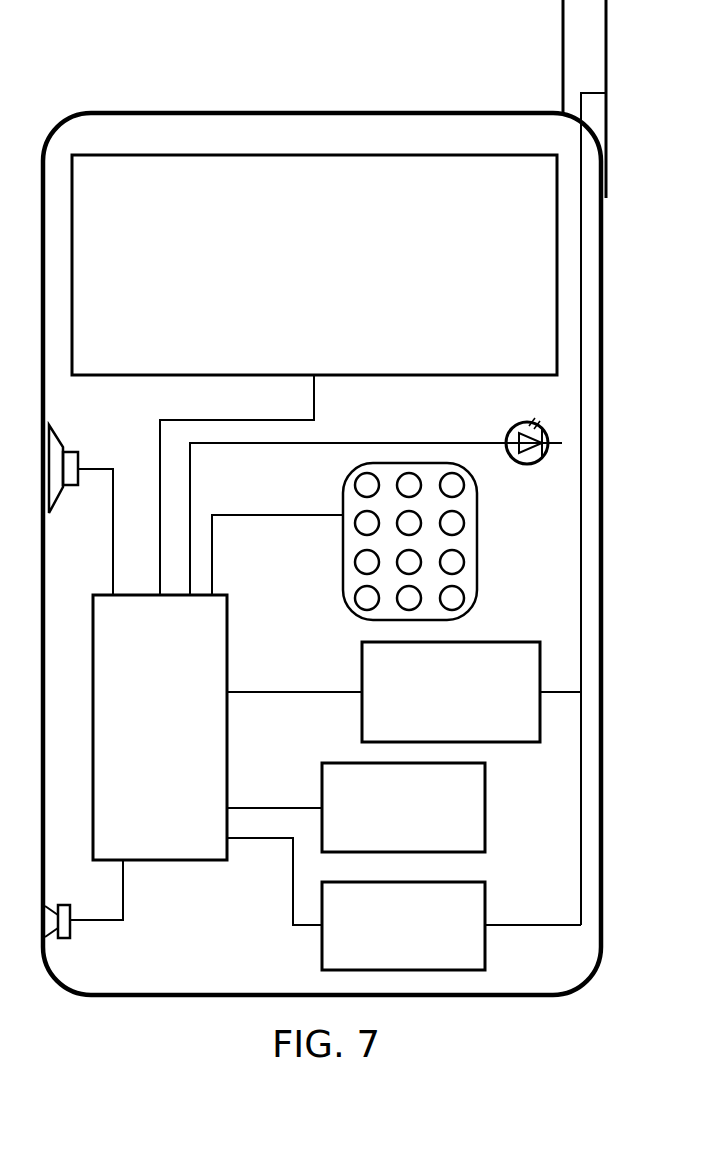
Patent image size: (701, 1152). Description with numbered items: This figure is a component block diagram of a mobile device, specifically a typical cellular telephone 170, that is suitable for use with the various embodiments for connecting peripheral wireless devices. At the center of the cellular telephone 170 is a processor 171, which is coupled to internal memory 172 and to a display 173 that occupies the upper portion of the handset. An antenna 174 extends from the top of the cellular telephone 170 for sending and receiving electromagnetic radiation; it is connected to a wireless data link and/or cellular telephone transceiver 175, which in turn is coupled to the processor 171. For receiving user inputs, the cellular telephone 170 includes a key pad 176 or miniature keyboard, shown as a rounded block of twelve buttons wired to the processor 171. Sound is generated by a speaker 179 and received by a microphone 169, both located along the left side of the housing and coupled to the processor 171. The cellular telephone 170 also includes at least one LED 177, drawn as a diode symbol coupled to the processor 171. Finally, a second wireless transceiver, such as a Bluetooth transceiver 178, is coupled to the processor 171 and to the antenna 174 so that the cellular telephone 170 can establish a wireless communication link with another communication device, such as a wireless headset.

The microphone 169 is at (72, 936).
The cellular telephone 170 is at (288, 108).
The processor 171 is at (160, 727).
The internal memory 172 is at (403, 807).
The display 173 is at (314, 265).
The antenna 174 is at (562, 2).
The cellular telephone transceiver 175 is at (451, 692).
The key pad 176 is at (477, 578).
The LED 177 is at (519, 463).
The Bluetooth transceiver 178 is at (403, 926).
The speaker 179 is at (80, 456).